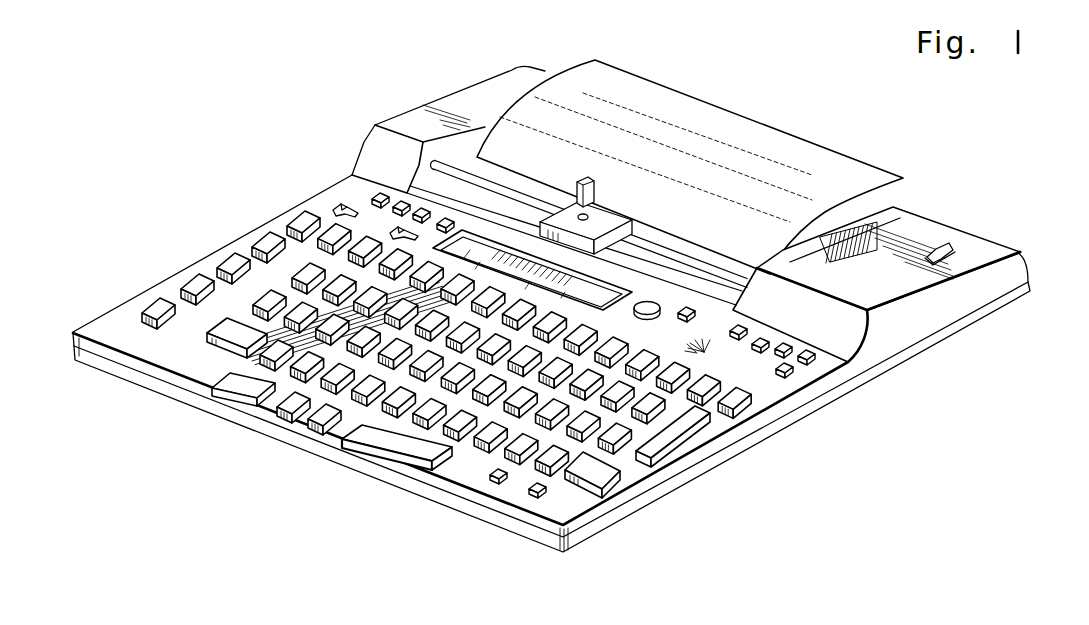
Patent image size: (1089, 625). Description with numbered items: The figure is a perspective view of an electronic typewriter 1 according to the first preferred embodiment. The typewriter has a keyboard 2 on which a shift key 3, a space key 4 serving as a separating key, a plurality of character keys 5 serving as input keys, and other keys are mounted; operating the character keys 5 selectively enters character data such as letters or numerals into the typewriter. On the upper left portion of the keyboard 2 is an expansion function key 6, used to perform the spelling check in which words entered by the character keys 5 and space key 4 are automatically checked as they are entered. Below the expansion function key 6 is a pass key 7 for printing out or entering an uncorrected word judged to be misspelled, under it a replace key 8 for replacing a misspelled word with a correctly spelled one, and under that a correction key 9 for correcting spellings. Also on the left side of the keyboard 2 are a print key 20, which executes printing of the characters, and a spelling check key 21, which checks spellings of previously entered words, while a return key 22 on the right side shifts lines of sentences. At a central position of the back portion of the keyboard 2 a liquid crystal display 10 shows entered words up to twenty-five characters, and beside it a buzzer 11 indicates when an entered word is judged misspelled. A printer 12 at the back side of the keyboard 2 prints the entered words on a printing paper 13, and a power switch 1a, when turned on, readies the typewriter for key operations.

The electronic typewriter 1 is at (993, 231).
The power switch 1a is at (937, 266).
The keyboard 2 is at (840, 371).
The shift key 3 is at (232, 346).
The space key 4 is at (362, 429).
The character keys 5 is at (356, 353).
The expansion function key 6 is at (370, 194).
The pass key 7 is at (297, 212).
The replace key 8 is at (262, 237).
The correction key 9 is at (223, 258).
The liquid crystal display 10 is at (598, 295).
The buzzer 11 is at (710, 341).
The printer 12 is at (620, 221).
The printing paper 13 is at (776, 150).
The print key 20 is at (186, 278).
The spelling check key 21 is at (148, 303).
The return key 22 is at (690, 430).